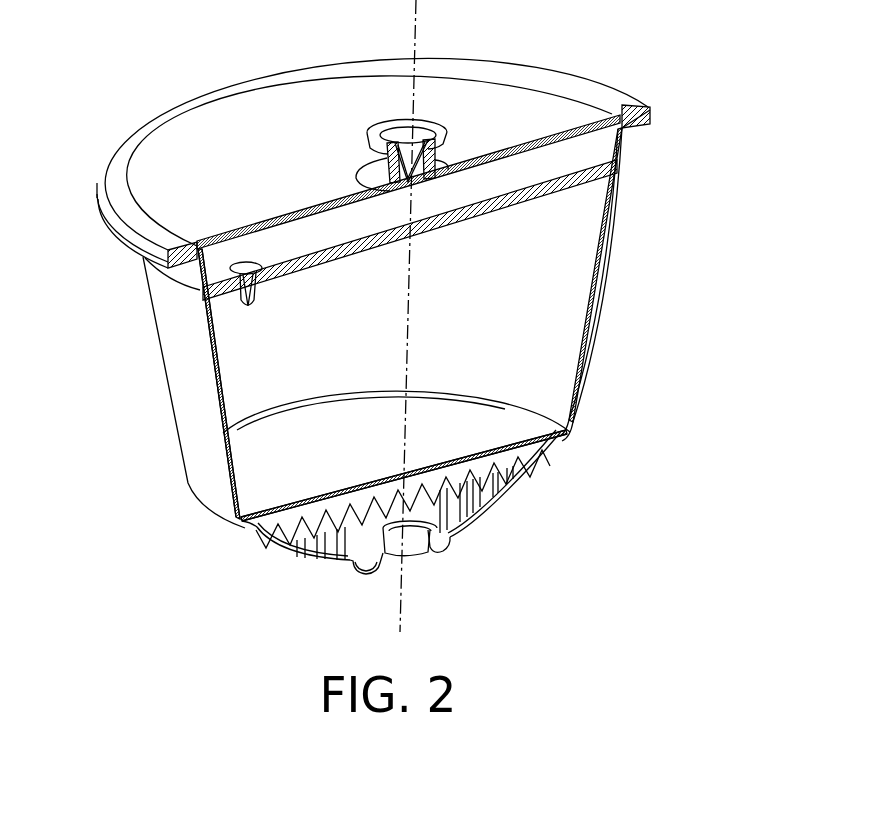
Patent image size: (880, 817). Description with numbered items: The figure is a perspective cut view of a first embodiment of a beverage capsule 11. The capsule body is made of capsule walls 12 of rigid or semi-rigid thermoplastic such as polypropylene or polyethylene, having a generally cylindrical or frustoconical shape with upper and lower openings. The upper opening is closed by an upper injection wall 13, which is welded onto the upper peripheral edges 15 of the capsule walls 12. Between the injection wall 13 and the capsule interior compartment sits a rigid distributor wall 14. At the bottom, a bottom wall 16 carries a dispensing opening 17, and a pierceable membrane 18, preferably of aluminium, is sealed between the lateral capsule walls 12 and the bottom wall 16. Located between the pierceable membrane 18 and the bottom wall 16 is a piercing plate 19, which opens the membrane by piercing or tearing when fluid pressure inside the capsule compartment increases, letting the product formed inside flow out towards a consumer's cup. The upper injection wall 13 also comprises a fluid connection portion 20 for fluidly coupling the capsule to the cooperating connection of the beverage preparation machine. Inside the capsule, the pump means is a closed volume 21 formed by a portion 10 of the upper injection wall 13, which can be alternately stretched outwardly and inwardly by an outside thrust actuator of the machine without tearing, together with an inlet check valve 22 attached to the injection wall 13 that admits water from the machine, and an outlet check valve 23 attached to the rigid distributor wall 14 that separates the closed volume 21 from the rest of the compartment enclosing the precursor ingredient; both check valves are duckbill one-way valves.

The portion of the capsule upper injection wall 10 is at (237, 170).
The beverage capsule 11 is at (618, 285).
The capsule walls 12 is at (157, 373).
The upper injection wall 13 is at (617, 86).
The rigid distributor wall 14 is at (490, 193).
The upper peripheral edges 15 is at (640, 128).
The bottom wall 16 is at (520, 483).
The dispensing opening 17 is at (418, 572).
The pierceable membrane 18 is at (325, 458).
The piercing plate 19 is at (323, 558).
The fluid connection portion 20 is at (383, 134).
The closed volume 21 is at (323, 220).
The inlet check valve 22 is at (414, 172).
The outlet check valve 23 is at (204, 303).